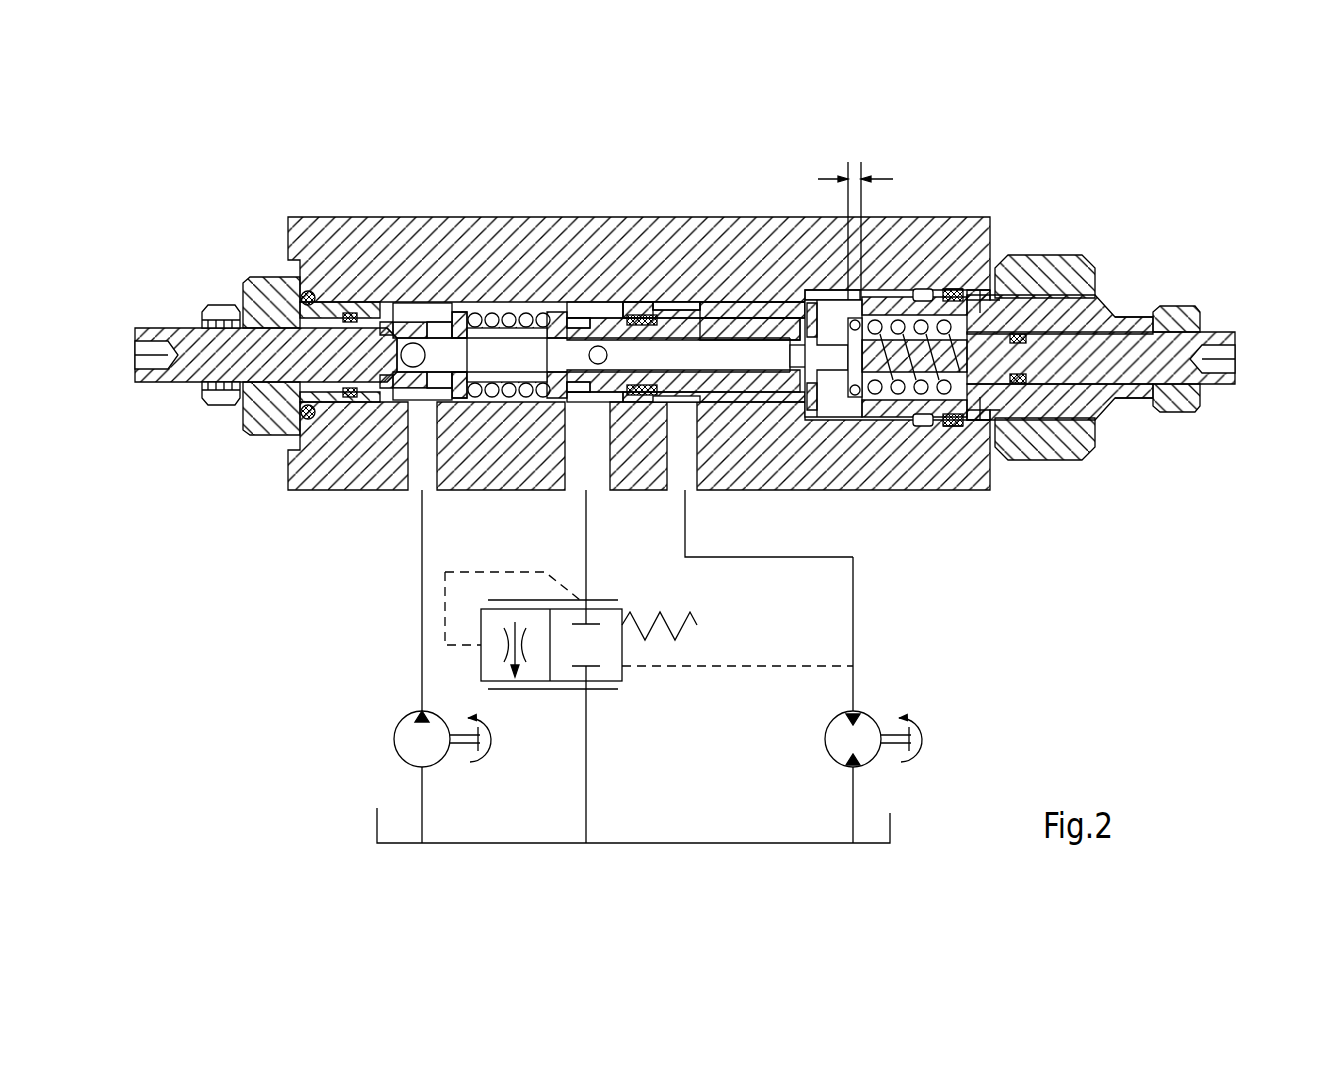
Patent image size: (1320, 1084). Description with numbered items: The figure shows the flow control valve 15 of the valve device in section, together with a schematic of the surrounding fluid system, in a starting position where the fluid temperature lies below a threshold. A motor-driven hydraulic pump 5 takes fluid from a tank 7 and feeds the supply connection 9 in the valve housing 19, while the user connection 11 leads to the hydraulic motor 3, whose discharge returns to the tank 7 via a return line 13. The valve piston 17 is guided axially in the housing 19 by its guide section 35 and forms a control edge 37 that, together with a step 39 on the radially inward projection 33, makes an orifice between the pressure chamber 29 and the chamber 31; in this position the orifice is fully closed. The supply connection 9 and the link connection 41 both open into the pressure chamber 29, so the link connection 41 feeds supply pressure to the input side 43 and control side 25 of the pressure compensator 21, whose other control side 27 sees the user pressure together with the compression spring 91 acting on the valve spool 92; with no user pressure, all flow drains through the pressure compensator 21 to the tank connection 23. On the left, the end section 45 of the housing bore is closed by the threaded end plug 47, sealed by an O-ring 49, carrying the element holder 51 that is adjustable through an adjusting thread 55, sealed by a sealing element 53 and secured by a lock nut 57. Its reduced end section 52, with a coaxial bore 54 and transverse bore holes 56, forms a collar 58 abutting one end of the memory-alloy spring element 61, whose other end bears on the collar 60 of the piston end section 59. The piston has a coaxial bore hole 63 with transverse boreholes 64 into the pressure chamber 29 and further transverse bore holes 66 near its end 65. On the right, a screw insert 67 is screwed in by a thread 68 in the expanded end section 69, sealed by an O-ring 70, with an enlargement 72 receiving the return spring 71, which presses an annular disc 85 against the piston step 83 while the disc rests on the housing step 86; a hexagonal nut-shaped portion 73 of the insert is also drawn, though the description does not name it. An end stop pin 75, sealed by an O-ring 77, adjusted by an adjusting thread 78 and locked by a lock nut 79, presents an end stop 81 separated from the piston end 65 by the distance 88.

The hydraulic motor 3 is at (878, 712).
The hydraulic pump 5 is at (394, 736).
The tank 7 is at (380, 817).
The supply connection 9 is at (420, 478).
The user connection 11 is at (685, 482).
The return line 13 is at (858, 785).
The flow control valve 15 is at (963, 205).
The valve piston 17 is at (730, 335).
The valve housing 19 is at (400, 255).
The pressure compensator 21 is at (625, 708).
The tank connection 23 is at (583, 692).
The control side 25 is at (480, 640).
The other control side 27 is at (628, 670).
The pressure chamber 29 is at (605, 325).
The chamber 31 is at (695, 330).
The projection 33 is at (640, 325).
The guide section 35 is at (760, 325).
The control edge 37 is at (682, 475).
The step 39 is at (665, 315).
The link connection 41 is at (588, 478).
The input side 43 is at (592, 603).
The end section 45 is at (450, 310).
The end plug 47 is at (265, 290).
The O-ring 49 is at (288, 433).
The element holder 51 is at (330, 410).
The end section 52 is at (488, 300).
The sealing element 53 is at (343, 300).
The coaxial bore 54 is at (485, 405).
The adjusting thread 55 is at (245, 432).
The transverse bore holes 56 is at (408, 400).
The lock nut 57 is at (215, 310).
The collar 58 is at (448, 405).
The end section 59 is at (592, 380).
The collar 60 is at (600, 310).
The spring element 61 is at (522, 318).
The coaxial bore hole 63 is at (725, 375).
The transverse boreholes 64 is at (585, 342).
The end 65 is at (880, 420).
The transverse bore holes 66 is at (790, 355).
The screw insert 67 is at (1115, 305).
The thread 68 is at (905, 290).
The expanded end section 69 is at (870, 400).
The O-ring 70 is at (958, 422).
The return spring 71 is at (1003, 300).
The enlargement 72 is at (930, 290).
The hex nut 73 is at (1055, 265).
The end stop pin 75 is at (1120, 372).
The O-ring 77 is at (1018, 440).
The adjusting thread 78 is at (1108, 425).
The lock nut 79 is at (1185, 305).
The end stop 81 is at (842, 395).
The step 83 is at (808, 418).
The annular disc 85 is at (850, 320).
The step 86 is at (790, 300).
The distance 88 is at (855, 162).
The compression spring 91 is at (695, 615).
The valve spool 92 is at (480, 660).